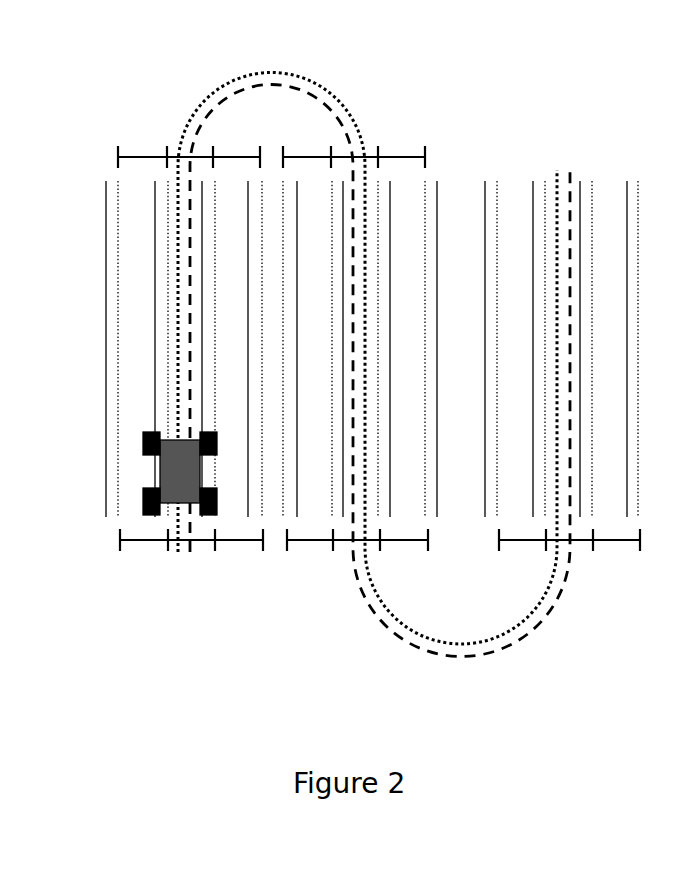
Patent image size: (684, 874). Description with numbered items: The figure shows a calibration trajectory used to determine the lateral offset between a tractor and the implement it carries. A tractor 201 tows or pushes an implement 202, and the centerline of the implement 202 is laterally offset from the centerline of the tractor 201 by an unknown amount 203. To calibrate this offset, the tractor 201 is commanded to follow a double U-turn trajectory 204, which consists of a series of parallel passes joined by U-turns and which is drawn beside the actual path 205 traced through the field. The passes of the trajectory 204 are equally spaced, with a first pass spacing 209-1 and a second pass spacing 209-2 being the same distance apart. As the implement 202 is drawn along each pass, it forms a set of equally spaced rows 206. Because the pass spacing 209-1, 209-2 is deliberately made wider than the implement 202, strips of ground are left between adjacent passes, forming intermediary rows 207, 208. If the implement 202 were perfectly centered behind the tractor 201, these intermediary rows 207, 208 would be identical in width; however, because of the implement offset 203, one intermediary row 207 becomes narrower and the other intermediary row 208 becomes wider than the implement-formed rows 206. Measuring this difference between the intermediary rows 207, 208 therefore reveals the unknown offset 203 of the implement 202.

The tractor 201 is at (177, 467).
The implement 202 is at (118, 539).
The implement offset 203 is at (143, 565).
The double U-turn trajectory 204 is at (200, 107).
The dotted actual path 205 is at (221, 96).
The implement-formed rows 206 is at (155, 397).
The intermediary row 207 is at (320, 253).
The intermediary row 208 is at (496, 252).
The pass spacing 209-1 is at (366, 313).
The pass spacing 209-2 is at (556, 313).